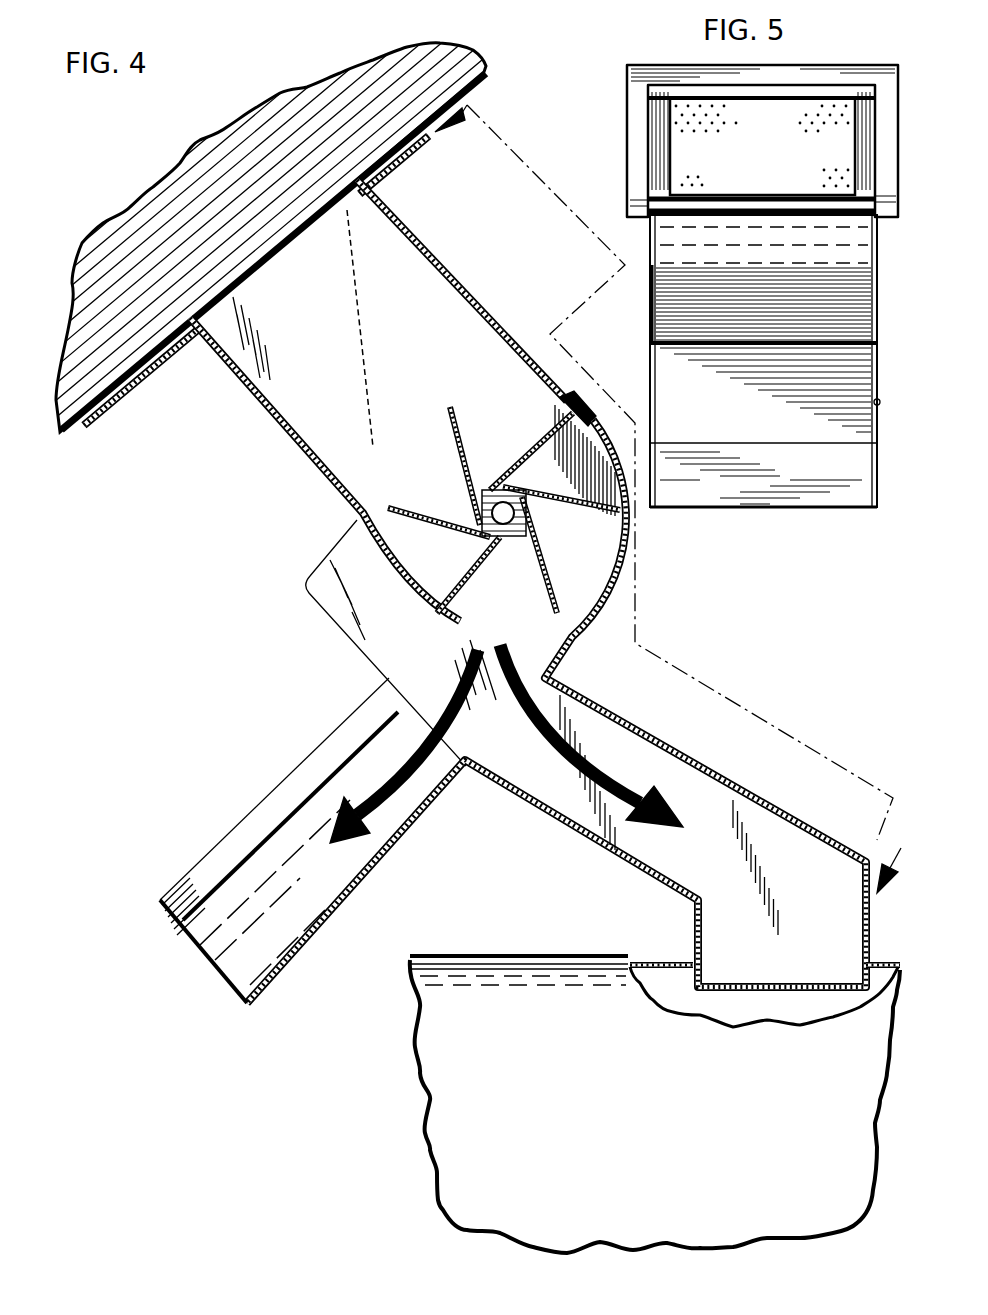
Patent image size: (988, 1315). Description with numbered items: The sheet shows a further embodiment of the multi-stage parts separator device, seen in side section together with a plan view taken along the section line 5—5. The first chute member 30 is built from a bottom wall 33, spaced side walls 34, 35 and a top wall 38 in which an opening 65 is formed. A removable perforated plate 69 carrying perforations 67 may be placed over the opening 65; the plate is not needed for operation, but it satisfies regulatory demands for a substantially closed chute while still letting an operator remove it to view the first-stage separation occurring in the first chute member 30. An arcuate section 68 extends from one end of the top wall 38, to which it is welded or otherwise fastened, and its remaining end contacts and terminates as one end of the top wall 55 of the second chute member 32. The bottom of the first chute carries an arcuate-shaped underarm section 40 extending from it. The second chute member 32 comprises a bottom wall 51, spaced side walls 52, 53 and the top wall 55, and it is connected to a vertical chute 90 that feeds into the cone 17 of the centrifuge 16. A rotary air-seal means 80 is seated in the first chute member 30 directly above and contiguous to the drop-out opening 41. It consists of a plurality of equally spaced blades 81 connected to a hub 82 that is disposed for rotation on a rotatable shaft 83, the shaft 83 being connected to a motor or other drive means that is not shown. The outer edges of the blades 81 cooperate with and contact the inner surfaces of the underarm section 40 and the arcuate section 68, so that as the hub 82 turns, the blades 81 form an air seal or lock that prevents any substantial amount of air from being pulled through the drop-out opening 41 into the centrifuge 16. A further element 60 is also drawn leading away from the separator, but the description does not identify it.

In FIG. 4, the section line 5— 5 is at (668, 502).
In FIG. 4, the perforations 67 is at (381, 200).
In FIG. 5, the perforations 67 is at (832, 103).
In FIG. 4, the perforated plate 69 is at (428, 238).
In FIG. 5, the perforated plate 69 is at (677, 100).
In FIG. 4, the first chute member 30 is at (450, 322).
In FIG. 4, the bottom wall 33 is at (288, 423).
In FIG. 4, the arcuate-shaped underarm section 40 is at (392, 560).
In FIG. 4, the opening 65 is at (572, 385).
In FIG. 4, the top wall 38 is at (596, 420).
In FIG. 5, the top wall 38 is at (660, 200).
In FIG. 4, the arcuate section 68 is at (624, 525).
In FIG. 5, the arcuate section 68 is at (855, 232).
In FIG. 4, the top wall 55 is at (688, 760).
In FIG. 5, the top wall 55 is at (650, 377).
In FIG. 4, the second chute member 32 is at (733, 800).
In FIG. 4, the bottom wall 51 is at (600, 850).
In FIG. 4, the vertical chute 90 is at (692, 932).
In FIG. 5, the vertical chute 90 is at (832, 498).
In FIG. 4, the drop-out opening 41 is at (470, 643).
In FIG. 4, the branch duct 60 is at (310, 935).
In FIG. 4, the rotary air-seal means 80 is at (535, 432).
In FIG. 4, the blades 81 is at (448, 420).
In FIG. 4, the hub 82 is at (498, 488).
In FIG. 4, the rotatable shaft 83 is at (484, 537).
In FIG. 4, the centrifuge 16 is at (462, 954).
In FIG. 4, the cone 17 is at (690, 1006).
In FIG. 5, the side wall 34 is at (648, 248).
In FIG. 5, the side wall 35 is at (877, 305).
In FIG. 5, the side wall 52 is at (650, 410).
In FIG. 5, the side wall 53 is at (853, 402).